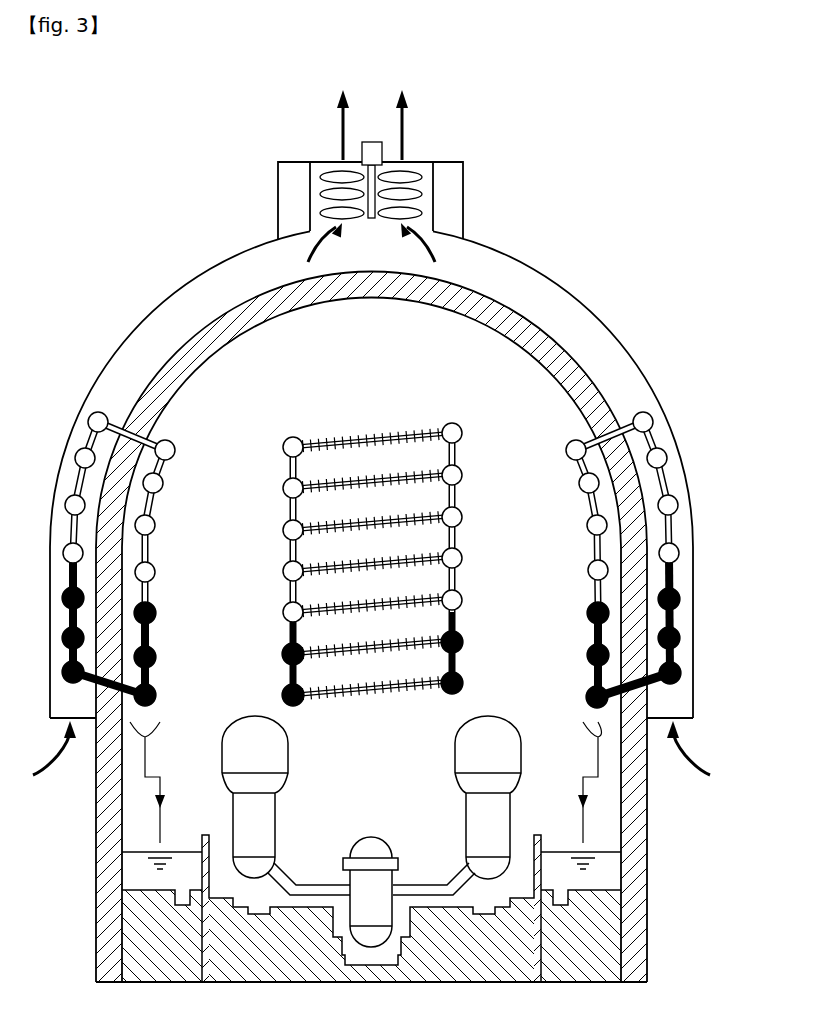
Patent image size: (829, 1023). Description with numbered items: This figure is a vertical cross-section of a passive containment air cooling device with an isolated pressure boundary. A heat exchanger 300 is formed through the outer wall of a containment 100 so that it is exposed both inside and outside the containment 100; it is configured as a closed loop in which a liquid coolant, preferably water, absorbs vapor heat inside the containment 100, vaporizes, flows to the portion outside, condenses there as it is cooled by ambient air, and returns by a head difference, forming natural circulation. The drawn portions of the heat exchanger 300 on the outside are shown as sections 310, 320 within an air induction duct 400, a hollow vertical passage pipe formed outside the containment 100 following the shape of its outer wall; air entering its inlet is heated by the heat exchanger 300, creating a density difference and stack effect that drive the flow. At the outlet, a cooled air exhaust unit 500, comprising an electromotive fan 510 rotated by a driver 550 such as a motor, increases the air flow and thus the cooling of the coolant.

The containment 100 is at (548, 335).
The heat exchanger 300 is at (656, 547).
The evaporator heat pipe section 310 is at (582, 463).
The condenser heat pipe section 320 is at (730, 693).
The air induction duct 400 is at (557, 282).
The cooled air exhaust unit 500 is at (284, 190).
The electromotive fan 510 is at (403, 177).
The driver 550 is at (372, 142).